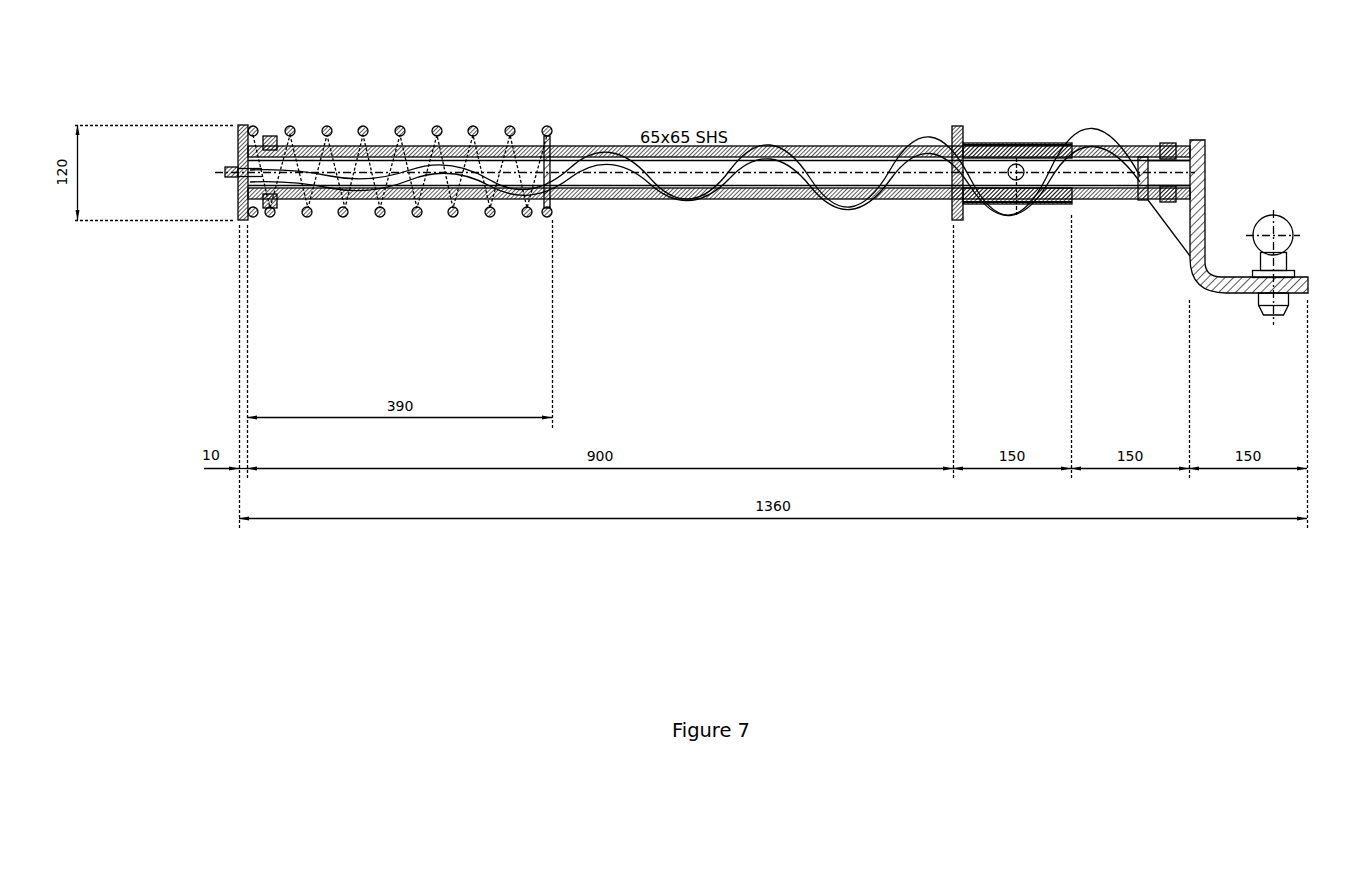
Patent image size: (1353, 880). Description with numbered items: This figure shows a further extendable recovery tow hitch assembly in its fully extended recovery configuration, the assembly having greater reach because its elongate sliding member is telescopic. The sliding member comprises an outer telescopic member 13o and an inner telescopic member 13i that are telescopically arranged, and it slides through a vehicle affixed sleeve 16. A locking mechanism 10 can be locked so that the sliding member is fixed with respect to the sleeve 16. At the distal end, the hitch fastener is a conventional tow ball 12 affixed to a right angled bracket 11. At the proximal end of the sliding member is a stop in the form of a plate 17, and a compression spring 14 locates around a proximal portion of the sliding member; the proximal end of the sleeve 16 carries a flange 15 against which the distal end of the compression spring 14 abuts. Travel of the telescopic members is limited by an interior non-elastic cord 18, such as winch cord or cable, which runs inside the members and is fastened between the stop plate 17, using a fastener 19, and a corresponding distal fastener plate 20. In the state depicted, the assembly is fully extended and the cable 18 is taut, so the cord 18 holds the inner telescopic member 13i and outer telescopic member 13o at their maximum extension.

The locking mechanism 10 is at (1018, 164).
The right angled bracket 11 is at (1207, 144).
The tow ball 12 is at (1280, 214).
The outer telescopic member 13o is at (793, 147).
The inner telescopic member 13i is at (840, 156).
The compression spring 14 is at (272, 138).
The flange 15 is at (955, 128).
The vehicle affixed sleeve 16 is at (985, 147).
The stop plate 17 is at (243, 125).
The cord 18 is at (560, 168).
The fastener 19 is at (228, 166).
The distal fastener plate 20 is at (1144, 157).